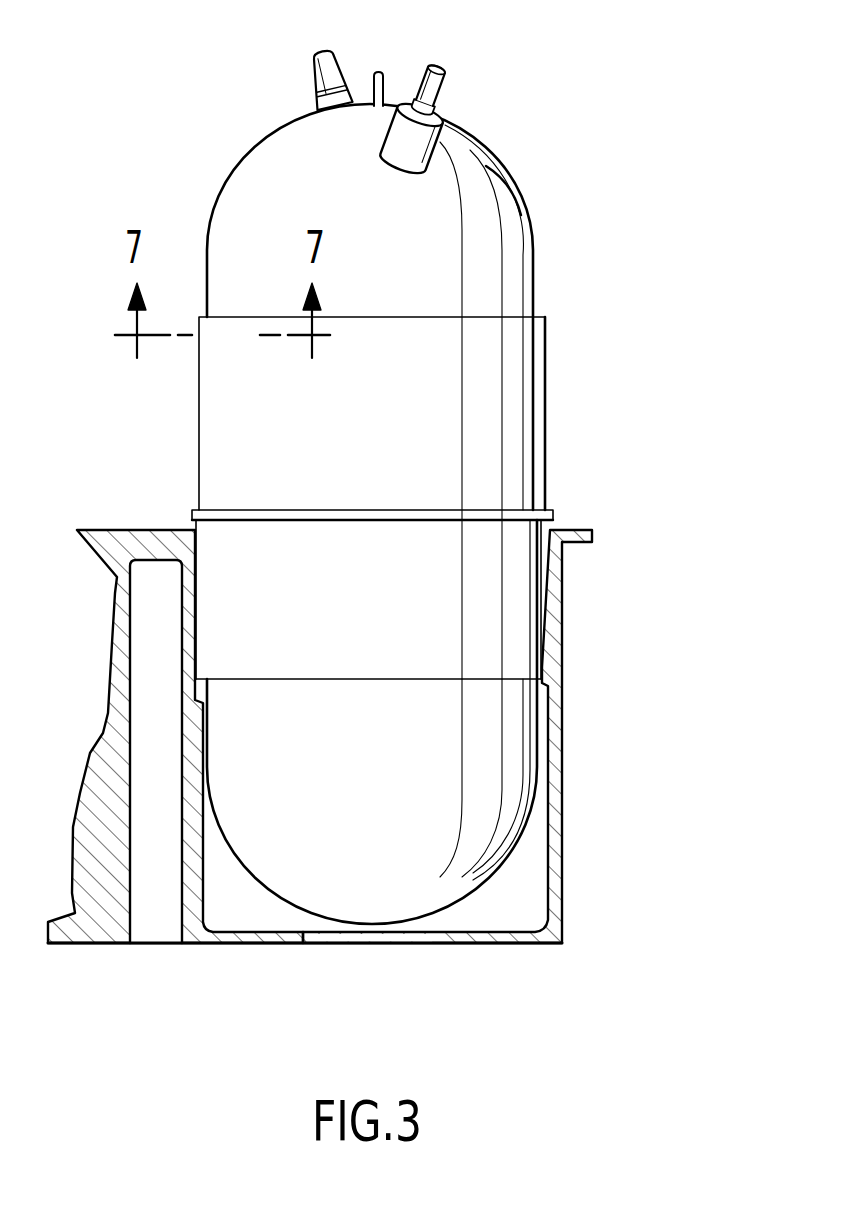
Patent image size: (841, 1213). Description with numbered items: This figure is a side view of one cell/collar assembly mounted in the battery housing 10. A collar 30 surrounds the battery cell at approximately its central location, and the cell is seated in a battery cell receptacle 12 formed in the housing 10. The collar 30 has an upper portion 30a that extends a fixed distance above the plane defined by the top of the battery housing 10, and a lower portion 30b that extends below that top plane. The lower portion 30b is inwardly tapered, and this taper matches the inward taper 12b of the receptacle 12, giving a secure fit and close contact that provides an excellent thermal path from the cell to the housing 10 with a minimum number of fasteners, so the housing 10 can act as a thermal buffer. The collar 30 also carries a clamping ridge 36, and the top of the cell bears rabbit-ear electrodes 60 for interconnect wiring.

The battery housing 10 is at (563, 833).
The battery cell receptacle 12 is at (513, 903).
The inward taper 12b is at (563, 672).
The collar 30 is at (489, 358).
The upper portion 30a is at (546, 397).
The lower portion 30b is at (563, 613).
The clamping ridge 36 is at (195, 508).
The electrodes 60 is at (317, 55).